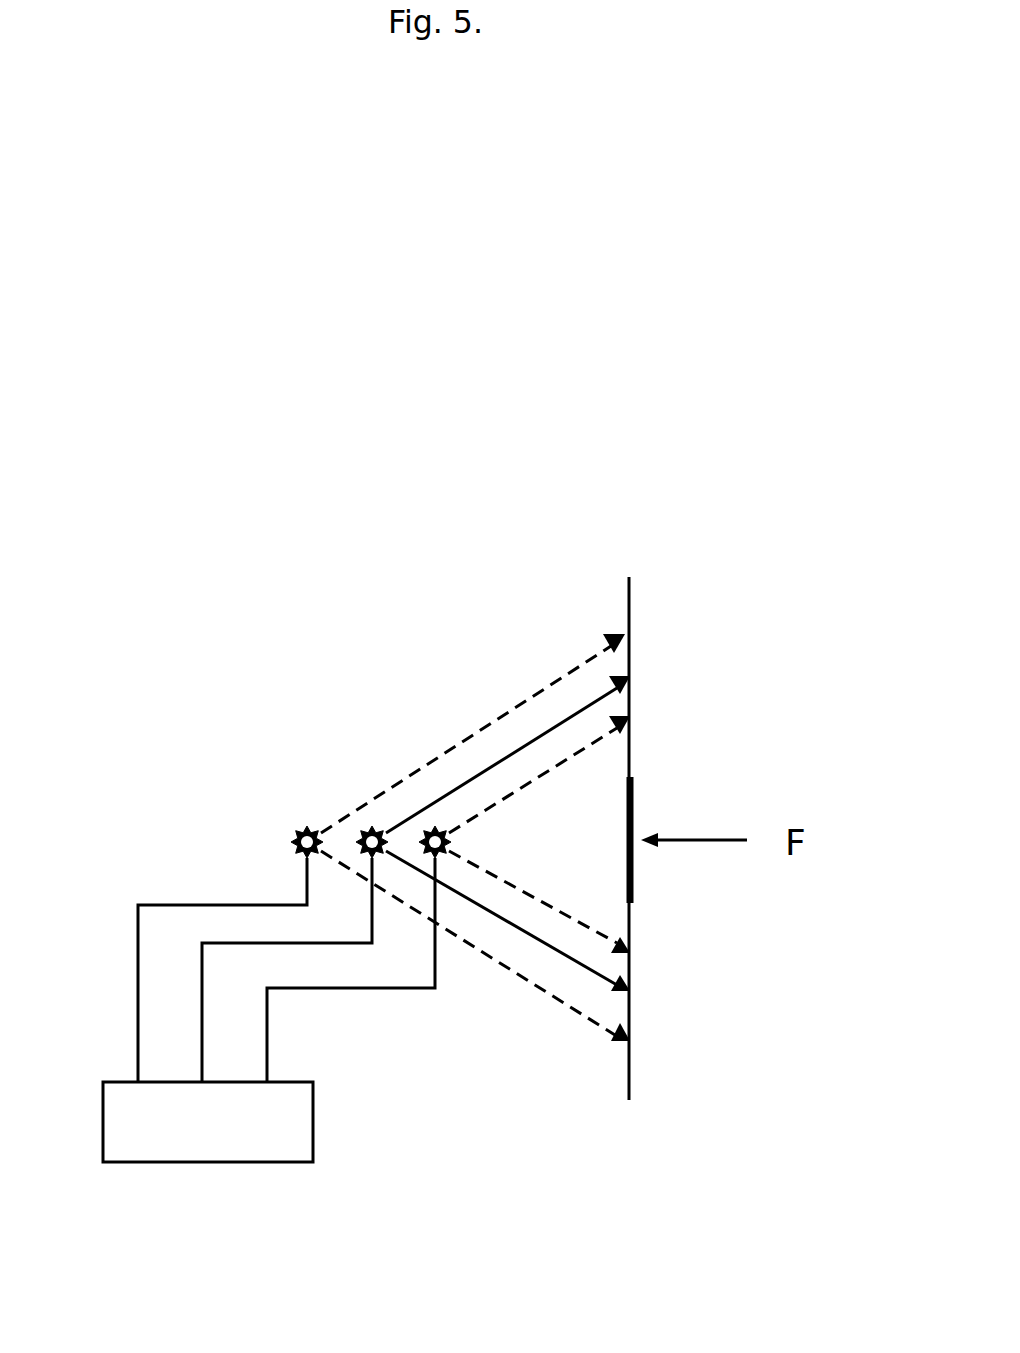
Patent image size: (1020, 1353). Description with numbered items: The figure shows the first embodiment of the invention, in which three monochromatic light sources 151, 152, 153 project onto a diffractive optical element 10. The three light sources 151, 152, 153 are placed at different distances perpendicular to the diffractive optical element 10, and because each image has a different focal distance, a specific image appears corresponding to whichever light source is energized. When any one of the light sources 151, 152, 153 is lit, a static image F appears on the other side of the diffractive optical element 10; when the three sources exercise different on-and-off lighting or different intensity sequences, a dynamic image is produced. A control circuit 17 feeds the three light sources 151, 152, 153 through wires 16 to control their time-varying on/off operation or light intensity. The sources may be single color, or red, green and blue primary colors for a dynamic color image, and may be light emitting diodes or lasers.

The diffractive optical element 10 is at (629, 577).
The monochromatic light source 151 is at (300, 832).
The monochromatic light source 152 is at (365, 830).
The monochromatic light source 153 is at (433, 828).
The wires 16 is at (335, 990).
The control circuit 17 is at (193, 1152).